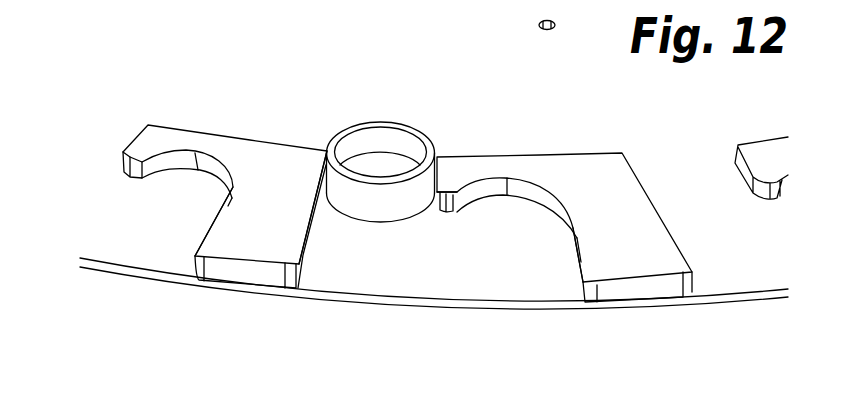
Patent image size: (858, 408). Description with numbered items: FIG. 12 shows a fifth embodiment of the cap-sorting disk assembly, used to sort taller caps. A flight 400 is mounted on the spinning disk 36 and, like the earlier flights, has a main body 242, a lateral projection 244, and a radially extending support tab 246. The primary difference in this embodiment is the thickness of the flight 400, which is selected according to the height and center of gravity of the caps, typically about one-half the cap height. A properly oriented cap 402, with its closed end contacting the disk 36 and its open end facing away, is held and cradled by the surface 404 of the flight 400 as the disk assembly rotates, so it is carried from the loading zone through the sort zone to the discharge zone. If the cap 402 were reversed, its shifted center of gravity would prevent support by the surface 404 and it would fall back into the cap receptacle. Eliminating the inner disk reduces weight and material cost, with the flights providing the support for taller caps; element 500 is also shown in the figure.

The flight 400 is at (268, 137).
The cap 402 is at (390, 118).
The lateral projection 244 is at (193, 142).
The radially extending support tab 246 is at (128, 177).
The surface 404 is at (197, 182).
The main body 242 is at (443, 233).
The disk 36 is at (335, 212).
The rail 500 is at (390, 258).